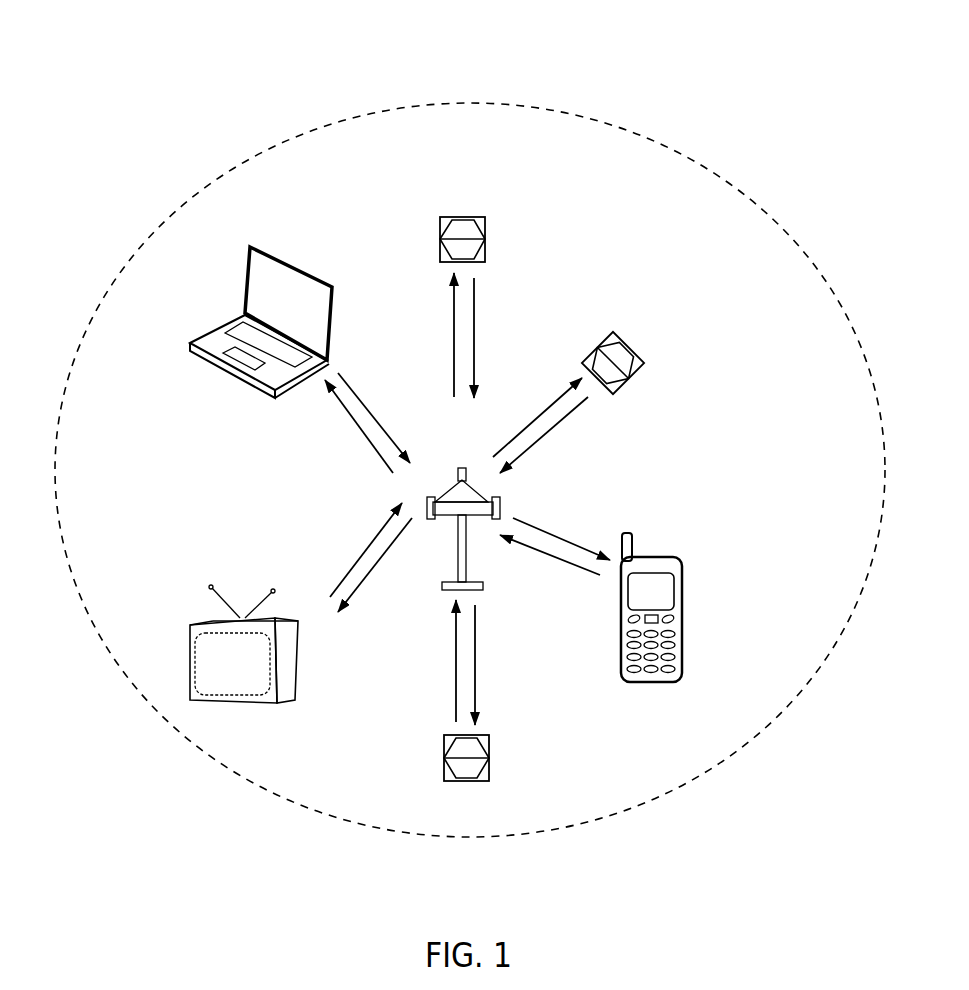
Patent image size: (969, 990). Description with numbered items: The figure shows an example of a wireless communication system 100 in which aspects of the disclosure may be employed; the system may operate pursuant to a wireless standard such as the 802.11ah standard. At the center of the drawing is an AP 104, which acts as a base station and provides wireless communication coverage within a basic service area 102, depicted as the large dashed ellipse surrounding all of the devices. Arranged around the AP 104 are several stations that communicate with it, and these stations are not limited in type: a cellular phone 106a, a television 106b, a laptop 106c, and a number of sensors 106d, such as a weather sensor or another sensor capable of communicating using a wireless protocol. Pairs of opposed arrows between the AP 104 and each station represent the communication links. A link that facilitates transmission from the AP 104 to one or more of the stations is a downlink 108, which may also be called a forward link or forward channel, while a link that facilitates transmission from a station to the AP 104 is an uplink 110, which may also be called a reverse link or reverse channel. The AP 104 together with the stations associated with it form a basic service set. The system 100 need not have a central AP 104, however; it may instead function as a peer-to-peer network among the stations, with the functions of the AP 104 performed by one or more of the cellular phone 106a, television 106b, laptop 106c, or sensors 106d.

The wireless communication system 100 is at (742, 78).
The basic service area 102 is at (818, 270).
The AP 104 is at (462, 468).
The cellular phone 106a is at (655, 557).
The television 106b is at (290, 616).
The laptop 106c is at (258, 247).
The sensors 106d is at (486, 240).
The downlink 108 is at (547, 520).
The uplink 110 is at (505, 556).